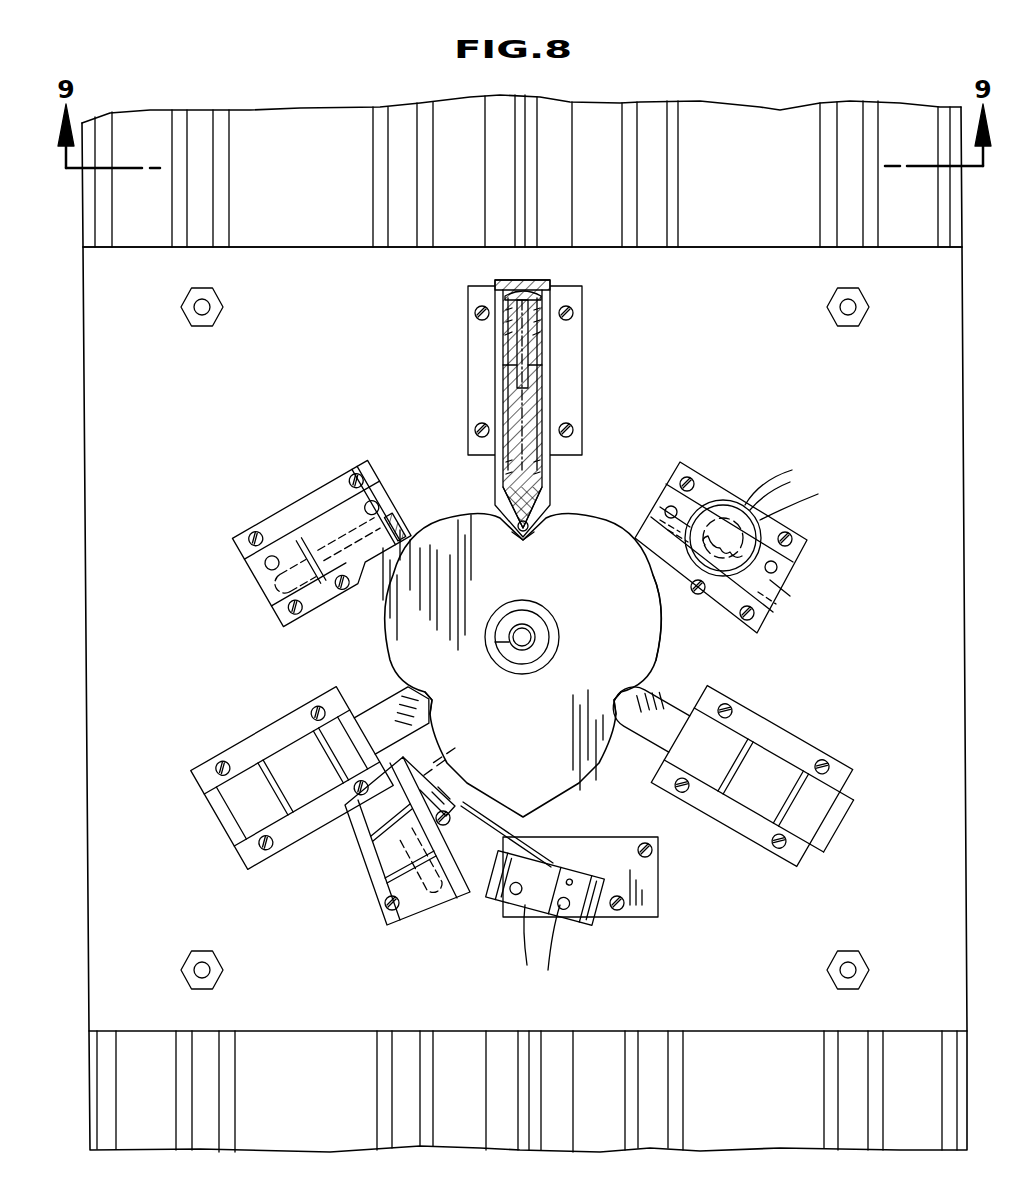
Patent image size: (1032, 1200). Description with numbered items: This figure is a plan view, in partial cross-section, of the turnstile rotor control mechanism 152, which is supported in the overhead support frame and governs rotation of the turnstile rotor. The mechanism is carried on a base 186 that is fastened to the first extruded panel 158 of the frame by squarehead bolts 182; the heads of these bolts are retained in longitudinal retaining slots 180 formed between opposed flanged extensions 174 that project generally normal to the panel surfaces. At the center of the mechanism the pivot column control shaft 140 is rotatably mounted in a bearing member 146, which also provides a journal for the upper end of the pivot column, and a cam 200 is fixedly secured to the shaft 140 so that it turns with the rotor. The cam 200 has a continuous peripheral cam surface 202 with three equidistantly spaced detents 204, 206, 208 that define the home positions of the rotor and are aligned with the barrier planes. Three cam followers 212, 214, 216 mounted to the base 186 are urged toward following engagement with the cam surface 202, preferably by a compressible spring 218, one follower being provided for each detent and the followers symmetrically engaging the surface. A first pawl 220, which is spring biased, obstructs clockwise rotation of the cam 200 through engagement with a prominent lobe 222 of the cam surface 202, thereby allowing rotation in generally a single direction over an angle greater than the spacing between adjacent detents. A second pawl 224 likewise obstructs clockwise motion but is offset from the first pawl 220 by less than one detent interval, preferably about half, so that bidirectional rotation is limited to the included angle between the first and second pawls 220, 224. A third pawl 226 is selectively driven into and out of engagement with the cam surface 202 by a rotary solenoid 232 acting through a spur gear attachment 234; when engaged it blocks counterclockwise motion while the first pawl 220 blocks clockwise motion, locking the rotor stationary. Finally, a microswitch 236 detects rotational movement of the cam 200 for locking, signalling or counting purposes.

The pivot column control shaft 140 is at (528, 632).
The bearing member 146 is at (529, 623).
The rotor control mechanism 152 is at (330, 1042).
The first extruded panel 158 is at (594, 118).
The flanged extensions 174 is at (836, 1128).
The longitudinal retaining slots 180 is at (208, 1134).
The squarehead bolts 182 is at (202, 307).
The base 186 is at (338, 268).
The cam 200 is at (557, 772).
The peripheral cam surface 202 is at (667, 618).
The detent 204 is at (528, 528).
The detent 206 is at (430, 702).
The detent 208 is at (614, 698).
The cam follower 212 is at (545, 499).
The cam follower 214 is at (400, 690).
The cam follower 216 is at (652, 690).
The compressible spring 218 is at (546, 301).
The first pawl 220 is at (398, 530).
The prominent lobe 222 is at (428, 536).
The second pawl 224 is at (445, 764).
The third pawl 226 is at (652, 526).
The rotary solenoid 232 is at (725, 512).
The spur gear attachment 234 is at (748, 548).
The microswitch 236 is at (588, 906).